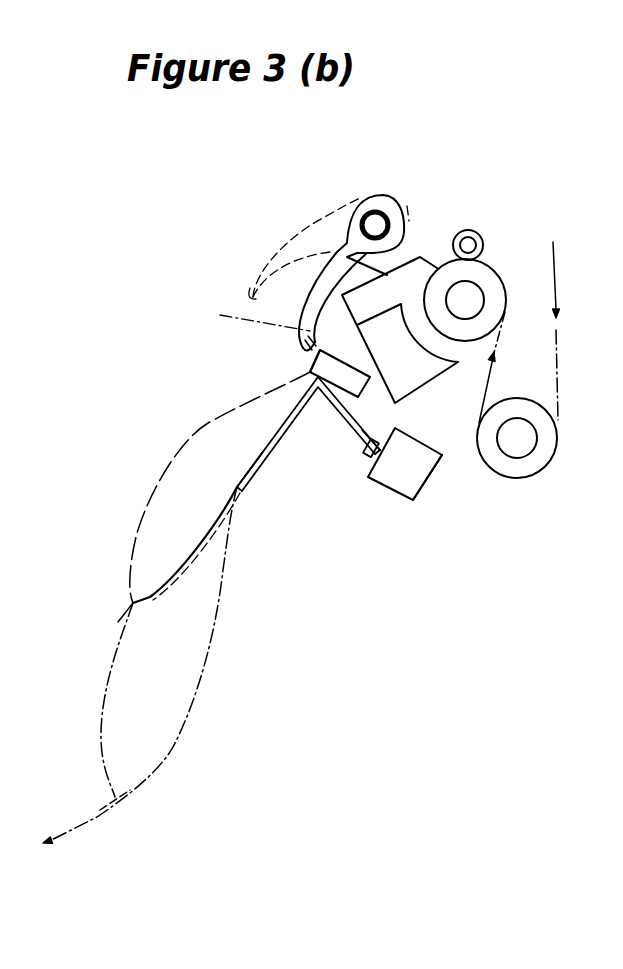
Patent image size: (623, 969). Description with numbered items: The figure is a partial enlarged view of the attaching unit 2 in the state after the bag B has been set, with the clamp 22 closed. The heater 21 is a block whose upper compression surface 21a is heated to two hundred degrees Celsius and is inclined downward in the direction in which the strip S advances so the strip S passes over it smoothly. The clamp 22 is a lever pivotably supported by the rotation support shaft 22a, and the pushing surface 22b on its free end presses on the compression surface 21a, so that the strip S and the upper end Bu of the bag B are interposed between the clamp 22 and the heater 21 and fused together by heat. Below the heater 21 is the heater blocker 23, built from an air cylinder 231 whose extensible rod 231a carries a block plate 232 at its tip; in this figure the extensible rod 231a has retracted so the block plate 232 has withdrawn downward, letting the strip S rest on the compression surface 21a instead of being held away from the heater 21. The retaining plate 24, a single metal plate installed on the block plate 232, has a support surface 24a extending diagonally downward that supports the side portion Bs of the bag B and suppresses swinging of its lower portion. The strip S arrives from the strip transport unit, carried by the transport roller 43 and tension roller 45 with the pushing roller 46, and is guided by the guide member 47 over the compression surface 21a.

The attaching unit 2 is at (266, 226).
The clamp 22 is at (318, 257).
The rotation support shaft 22a is at (375, 225).
The pushing surface 22b is at (310, 357).
The heater 21 is at (380, 400).
The compression surface 21a is at (307, 368).
The guide member 47 is at (420, 257).
The transport roller 43 is at (508, 300).
The pushing roller 46 is at (484, 236).
The tension roller 45 is at (556, 455).
The heater blocker 23 is at (391, 496).
The air cylinder 231 is at (423, 488).
The extensible rod 231a is at (366, 454).
The block plate 232 is at (362, 435).
The retaining plate 24 is at (244, 486).
The support surface 24a is at (260, 452).
The bag B is at (208, 423).
The side portion Bs is at (273, 457).
The upper end Bu is at (249, 316).
The strip S is at (558, 280).